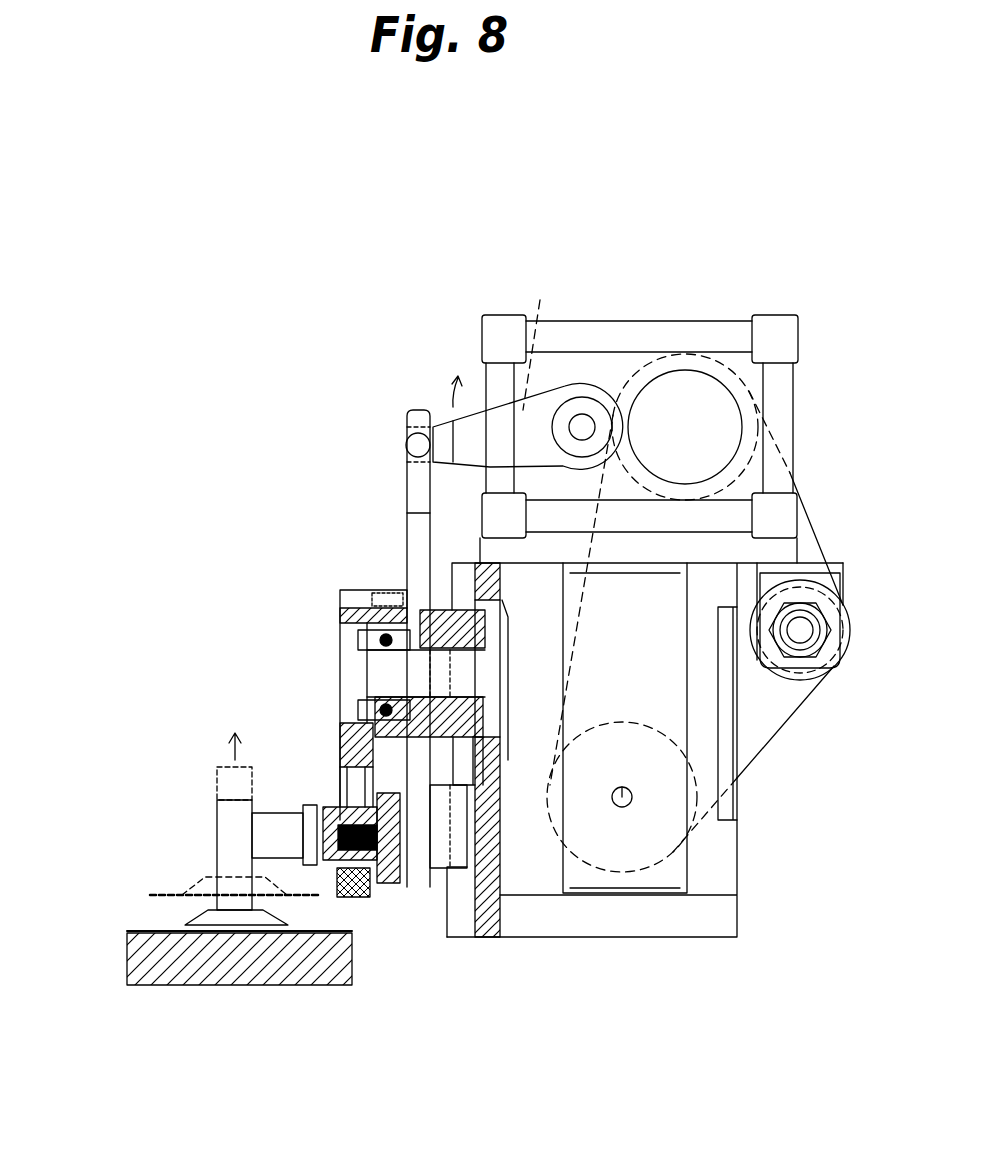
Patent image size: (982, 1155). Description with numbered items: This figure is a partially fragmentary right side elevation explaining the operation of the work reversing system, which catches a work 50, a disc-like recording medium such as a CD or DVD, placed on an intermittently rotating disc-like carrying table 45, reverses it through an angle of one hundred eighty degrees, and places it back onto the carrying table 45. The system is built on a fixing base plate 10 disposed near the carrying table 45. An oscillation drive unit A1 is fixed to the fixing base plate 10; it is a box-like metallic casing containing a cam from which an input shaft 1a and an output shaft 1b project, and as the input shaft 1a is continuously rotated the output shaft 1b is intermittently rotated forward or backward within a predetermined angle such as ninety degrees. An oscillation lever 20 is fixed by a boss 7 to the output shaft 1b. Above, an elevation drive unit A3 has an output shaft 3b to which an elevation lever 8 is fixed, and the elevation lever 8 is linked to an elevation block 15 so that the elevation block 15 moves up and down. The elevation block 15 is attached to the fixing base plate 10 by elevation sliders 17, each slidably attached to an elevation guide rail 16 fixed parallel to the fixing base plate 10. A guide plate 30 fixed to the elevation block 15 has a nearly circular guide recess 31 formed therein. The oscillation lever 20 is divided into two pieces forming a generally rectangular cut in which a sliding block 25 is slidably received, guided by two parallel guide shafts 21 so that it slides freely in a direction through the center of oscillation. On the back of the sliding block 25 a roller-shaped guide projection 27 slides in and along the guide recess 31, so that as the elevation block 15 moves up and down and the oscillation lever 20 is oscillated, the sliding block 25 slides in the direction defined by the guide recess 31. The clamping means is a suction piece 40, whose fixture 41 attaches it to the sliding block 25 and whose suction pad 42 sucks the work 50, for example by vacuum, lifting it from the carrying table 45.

The elevation lever 8 is at (527, 410).
The output shaft 3b is at (582, 427).
The elevation drive unit A3 is at (638, 352).
The elevation block 15 is at (413, 612).
The output shaft 1b is at (403, 593).
The oscillation lever 20 is at (345, 765).
The guide shaft 21 is at (345, 790).
The sliding block 25 is at (325, 810).
The guide plate 30 is at (385, 832).
The guide recess 31 is at (425, 832).
The guide projection 27 is at (440, 835).
The boss 7 is at (470, 790).
The elevation guide rail 16 is at (462, 920).
The fixing base plate 10 is at (490, 917).
The elevation slider 17 is at (503, 722).
The oscillation drive unit A1 is at (657, 663).
The input shaft 1a is at (633, 800).
The fixture 41 is at (267, 837).
The suction piece 40 is at (205, 897).
The work 50 is at (163, 931).
The suction pad 42 is at (232, 920).
The carrying table 45 is at (280, 957).